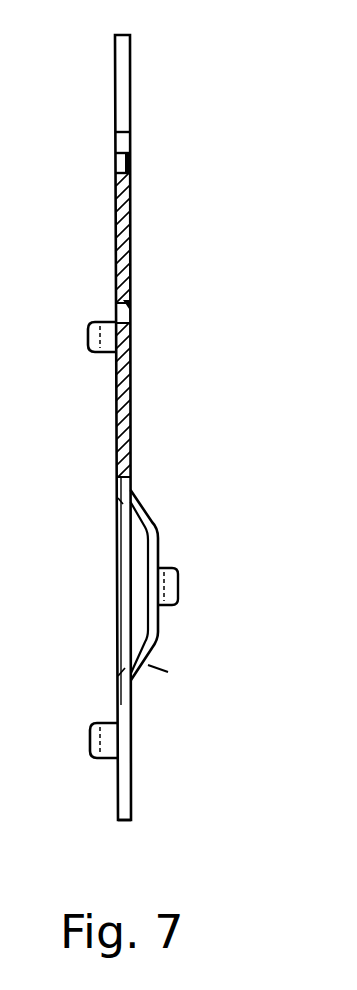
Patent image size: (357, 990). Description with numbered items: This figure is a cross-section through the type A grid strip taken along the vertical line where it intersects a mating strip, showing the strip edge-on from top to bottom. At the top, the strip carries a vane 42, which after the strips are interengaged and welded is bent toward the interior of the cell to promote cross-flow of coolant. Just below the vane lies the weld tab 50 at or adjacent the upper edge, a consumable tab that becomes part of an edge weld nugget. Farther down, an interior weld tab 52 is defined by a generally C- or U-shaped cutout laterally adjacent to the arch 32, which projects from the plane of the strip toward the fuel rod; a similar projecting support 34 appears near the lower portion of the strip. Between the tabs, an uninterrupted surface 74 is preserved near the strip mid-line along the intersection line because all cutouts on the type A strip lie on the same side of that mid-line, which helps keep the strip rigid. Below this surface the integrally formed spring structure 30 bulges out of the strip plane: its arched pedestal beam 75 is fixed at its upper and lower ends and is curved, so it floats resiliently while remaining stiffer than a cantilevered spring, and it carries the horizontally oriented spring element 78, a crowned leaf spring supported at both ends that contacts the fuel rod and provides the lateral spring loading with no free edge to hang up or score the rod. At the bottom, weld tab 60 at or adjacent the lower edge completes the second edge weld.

The spring structure 30 is at (172, 544).
The arch 32 is at (88, 322).
The second ball detent 34 is at (90, 740).
The vane 42 is at (130, 82).
The weld tab 50 is at (130, 163).
The interior weld tab 52 is at (131, 315).
The weld tab 60 is at (132, 813).
The uninterrupted surface 74 is at (131, 402).
The beam 75 is at (155, 517).
The spring element 78 is at (178, 586).